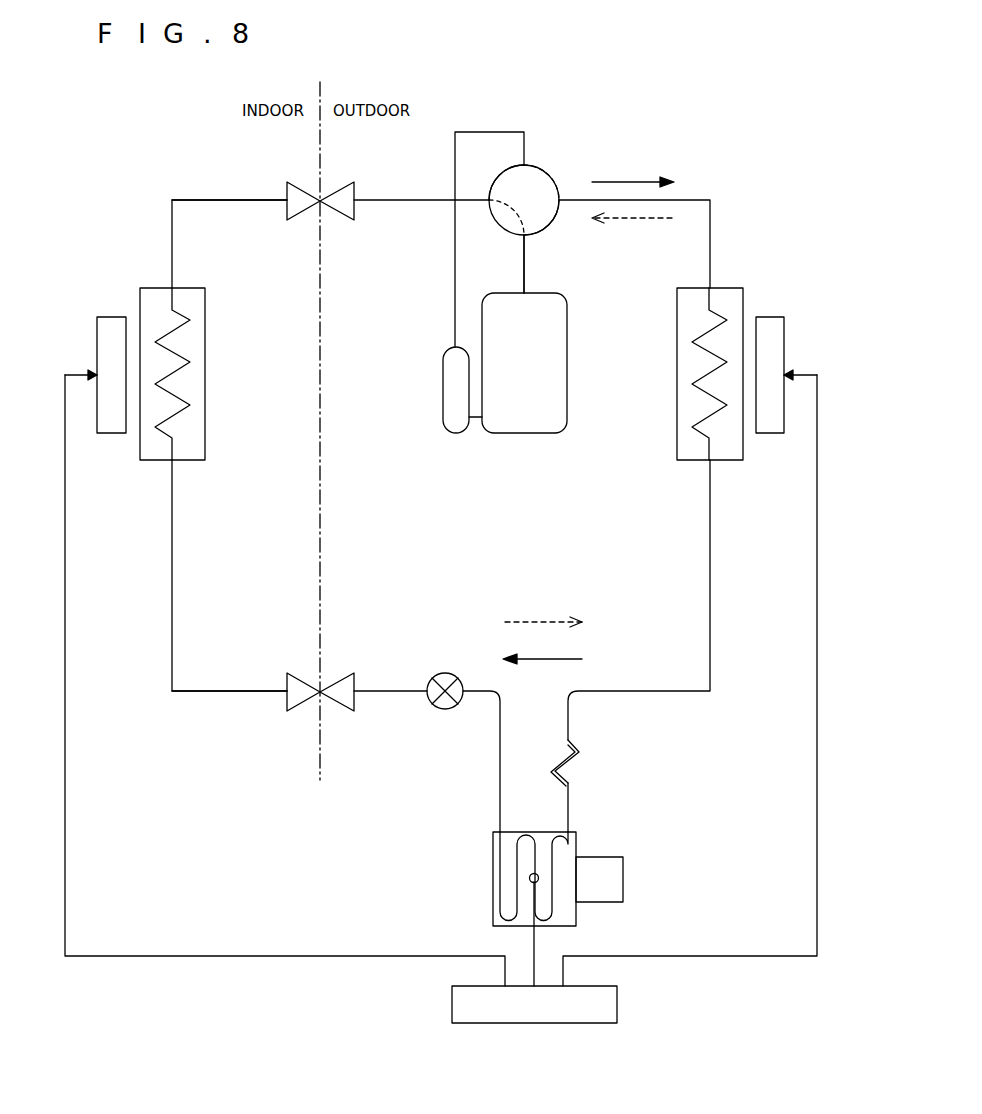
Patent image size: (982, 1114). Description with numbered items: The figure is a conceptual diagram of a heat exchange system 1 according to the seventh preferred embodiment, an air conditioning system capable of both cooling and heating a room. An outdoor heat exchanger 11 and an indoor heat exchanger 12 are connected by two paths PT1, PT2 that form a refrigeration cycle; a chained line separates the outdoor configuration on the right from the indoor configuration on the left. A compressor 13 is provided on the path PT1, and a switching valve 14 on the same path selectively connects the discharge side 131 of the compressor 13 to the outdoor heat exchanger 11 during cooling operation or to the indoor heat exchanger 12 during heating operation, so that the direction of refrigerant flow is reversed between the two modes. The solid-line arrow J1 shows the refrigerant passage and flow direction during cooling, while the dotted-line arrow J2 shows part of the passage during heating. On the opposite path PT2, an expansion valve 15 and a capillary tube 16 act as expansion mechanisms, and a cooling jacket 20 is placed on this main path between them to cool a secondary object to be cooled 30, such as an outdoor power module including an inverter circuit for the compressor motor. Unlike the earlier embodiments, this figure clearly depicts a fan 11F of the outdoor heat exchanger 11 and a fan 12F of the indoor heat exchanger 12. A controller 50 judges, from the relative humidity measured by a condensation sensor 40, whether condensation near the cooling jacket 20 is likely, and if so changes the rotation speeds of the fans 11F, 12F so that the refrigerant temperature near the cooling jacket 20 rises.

The heat exchange system 1 is at (216, 119).
The outdoor heat exchanger 11 is at (677, 343).
The fan of the outdoor heat exchanger 11F is at (770, 440).
The indoor heat exchanger 12 is at (205, 372).
The fan of the indoor heat exchanger 12F is at (112, 440).
The compressor 13 is at (567, 413).
The discharge side of the compressor 131 is at (536, 290).
The switching valve 14 is at (542, 172).
The expansion valve 15 is at (445, 712).
The capillary tube 16 is at (580, 752).
The cooling jacket 20 is at (493, 857).
The secondary object to be cooled 30 is at (623, 862).
The condensation sensor 40 is at (530, 876).
The controller 50 is at (617, 1002).
The path PT1 is at (172, 240).
The path PT2 is at (172, 597).
The arrow of solid line J1 is at (588, 412).
The arrow of dotted line J2 is at (588, 420).